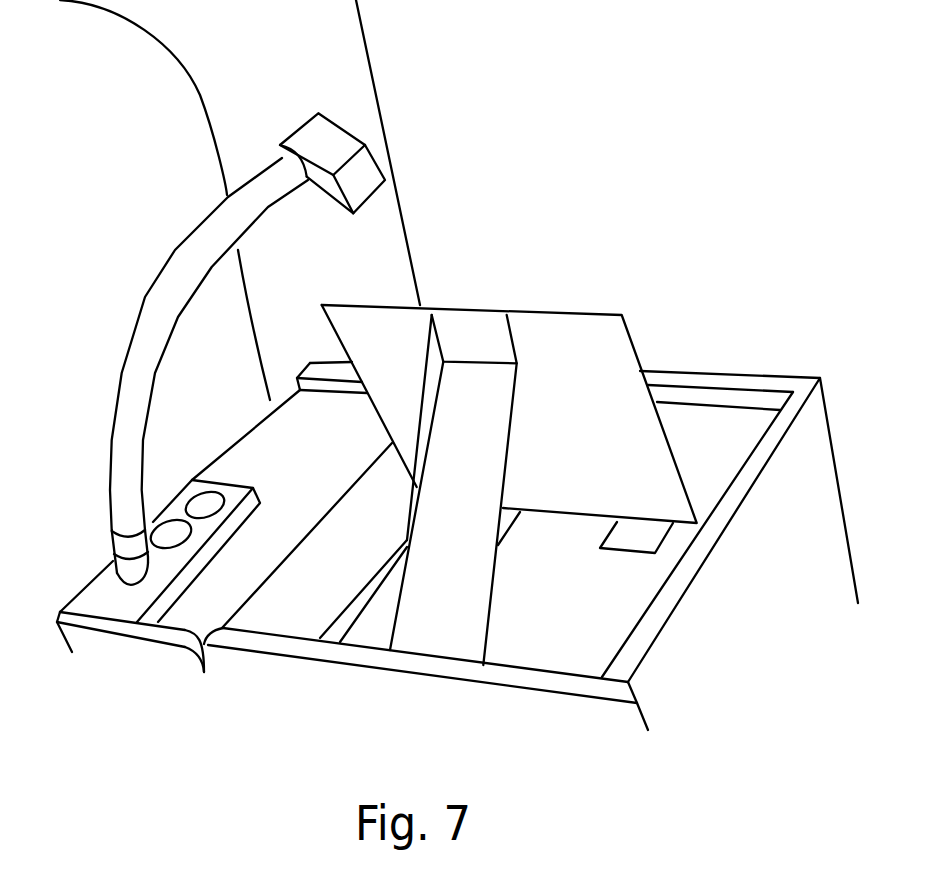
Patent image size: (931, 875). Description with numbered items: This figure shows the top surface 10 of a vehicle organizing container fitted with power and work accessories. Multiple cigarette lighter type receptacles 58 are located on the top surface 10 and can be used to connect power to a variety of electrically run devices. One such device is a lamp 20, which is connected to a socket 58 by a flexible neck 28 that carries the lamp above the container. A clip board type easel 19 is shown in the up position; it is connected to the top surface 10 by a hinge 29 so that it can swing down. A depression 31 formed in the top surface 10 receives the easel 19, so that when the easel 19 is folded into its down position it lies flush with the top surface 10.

The top surface 10 is at (270, 443).
The clip board type easel 19 is at (577, 340).
The lamp 20 is at (310, 137).
The flexible neck 28 is at (175, 268).
The hinge 29 is at (643, 532).
The depression 31 is at (608, 632).
The cigarette lighter type receptacle 58 is at (185, 480).